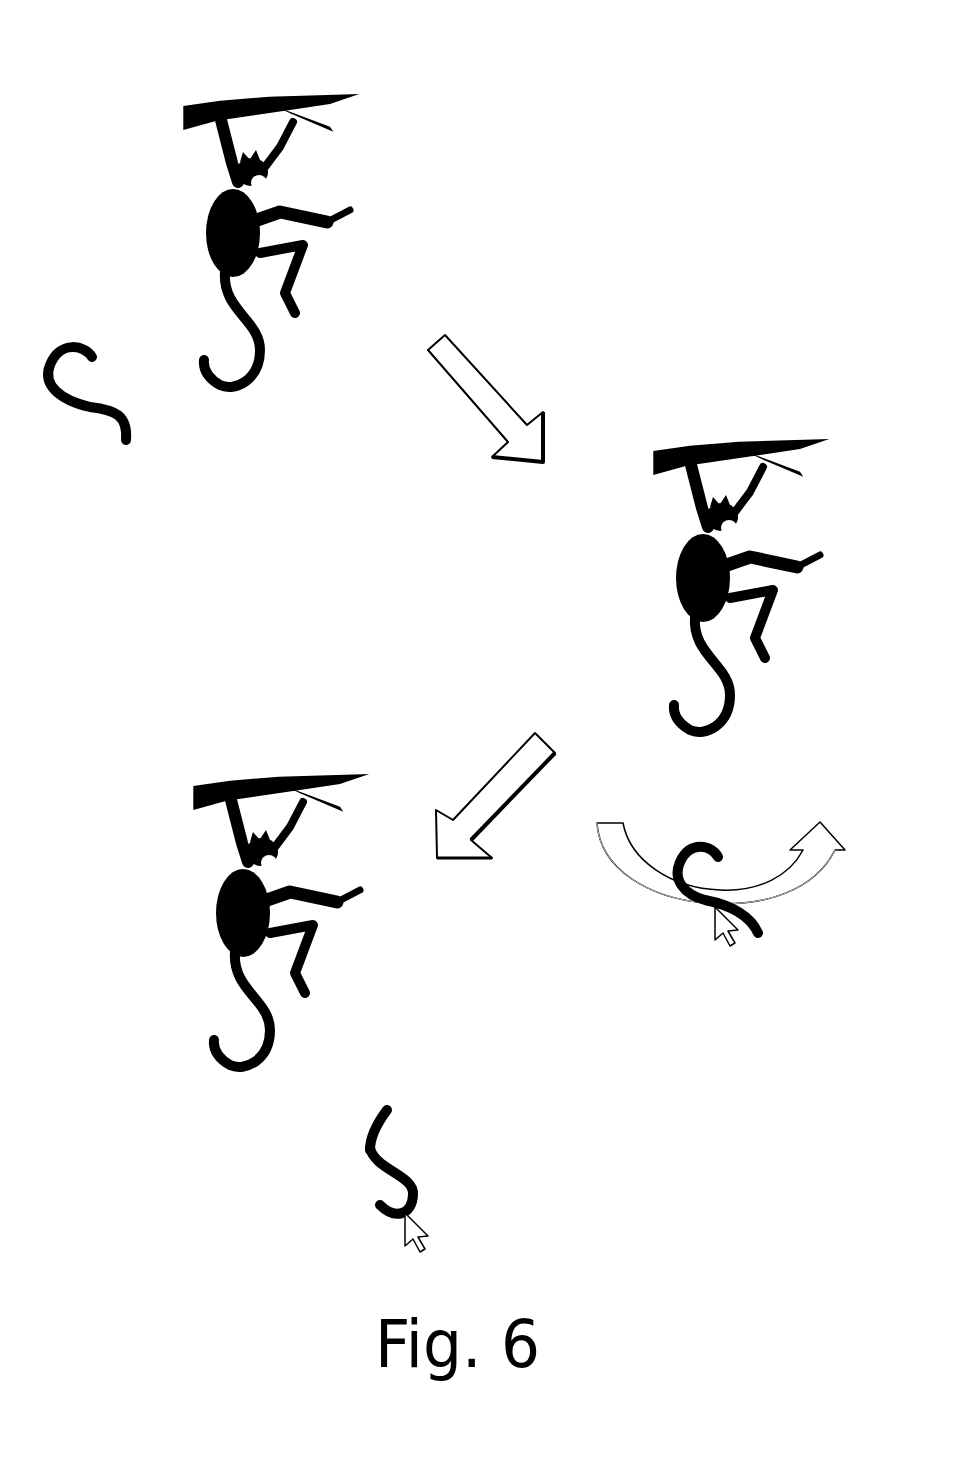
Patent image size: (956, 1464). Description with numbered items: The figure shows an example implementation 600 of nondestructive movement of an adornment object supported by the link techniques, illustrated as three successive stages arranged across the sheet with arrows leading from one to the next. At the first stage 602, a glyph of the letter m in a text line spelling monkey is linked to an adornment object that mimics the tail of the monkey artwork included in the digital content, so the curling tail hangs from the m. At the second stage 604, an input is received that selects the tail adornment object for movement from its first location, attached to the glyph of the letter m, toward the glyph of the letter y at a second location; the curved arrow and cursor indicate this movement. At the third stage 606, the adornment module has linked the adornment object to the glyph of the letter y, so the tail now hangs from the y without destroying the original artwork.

The example implementation 600 is at (748, 75).
The first stage 602 is at (110, 92).
The second stage 604 is at (784, 398).
The third stage 606 is at (115, 761).